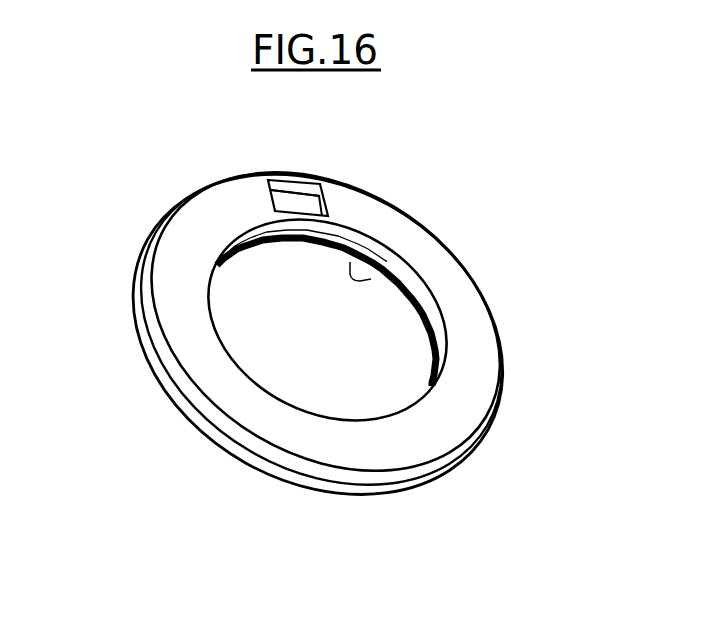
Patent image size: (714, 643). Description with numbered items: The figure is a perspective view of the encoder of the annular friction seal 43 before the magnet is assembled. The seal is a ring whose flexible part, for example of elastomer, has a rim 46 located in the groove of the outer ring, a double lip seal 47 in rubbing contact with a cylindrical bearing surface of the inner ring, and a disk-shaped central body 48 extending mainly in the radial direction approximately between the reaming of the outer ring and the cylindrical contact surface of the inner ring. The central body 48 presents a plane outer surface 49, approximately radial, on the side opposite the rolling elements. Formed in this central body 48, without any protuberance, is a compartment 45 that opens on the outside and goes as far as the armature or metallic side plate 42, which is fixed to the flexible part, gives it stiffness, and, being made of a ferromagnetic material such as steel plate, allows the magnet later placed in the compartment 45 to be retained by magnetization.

The armature or metallic side plate 42 is at (292, 203).
The annular friction seal 43 is at (318, 331).
The compartment 45 is at (290, 185).
The rim 46 is at (183, 408).
The double lip seal 47 is at (390, 278).
The disk-shaped central body 48 is at (365, 190).
The plane outer surface 49 is at (352, 208).